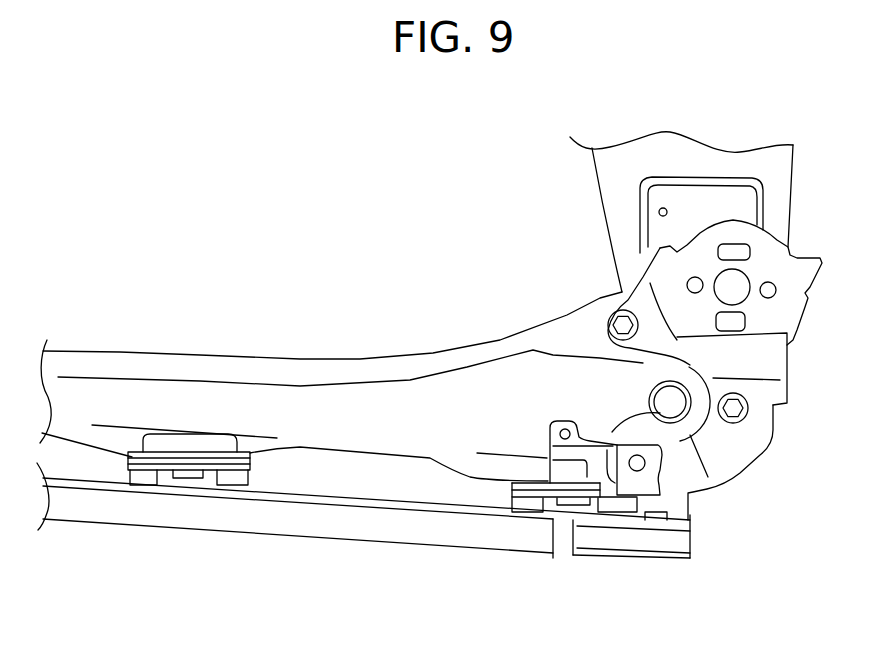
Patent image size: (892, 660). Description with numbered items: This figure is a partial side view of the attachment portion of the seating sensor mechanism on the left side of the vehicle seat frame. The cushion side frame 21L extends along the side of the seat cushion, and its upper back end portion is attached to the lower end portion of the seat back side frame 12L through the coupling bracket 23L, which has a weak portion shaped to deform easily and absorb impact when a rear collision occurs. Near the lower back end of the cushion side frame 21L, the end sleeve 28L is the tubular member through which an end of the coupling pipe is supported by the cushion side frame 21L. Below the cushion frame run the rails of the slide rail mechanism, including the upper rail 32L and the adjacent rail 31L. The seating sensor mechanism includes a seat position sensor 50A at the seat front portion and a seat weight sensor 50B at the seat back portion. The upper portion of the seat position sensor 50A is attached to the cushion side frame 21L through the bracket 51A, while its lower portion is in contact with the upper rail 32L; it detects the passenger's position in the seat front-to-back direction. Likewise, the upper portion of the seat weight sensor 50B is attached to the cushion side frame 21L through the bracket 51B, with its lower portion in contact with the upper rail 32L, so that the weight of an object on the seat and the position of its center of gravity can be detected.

The seat back side frame 12L is at (612, 200).
The cushion side frame 21L is at (350, 377).
The coupling bracket 23L is at (788, 313).
The end sleeve 28L is at (688, 410).
The left upper rail 31L is at (390, 533).
The upper rail 32L is at (663, 542).
The seat position sensor 50A is at (180, 488).
The seat weight sensor 50B is at (556, 513).
The bracket 51A is at (225, 452).
The bracket 51B is at (640, 482).